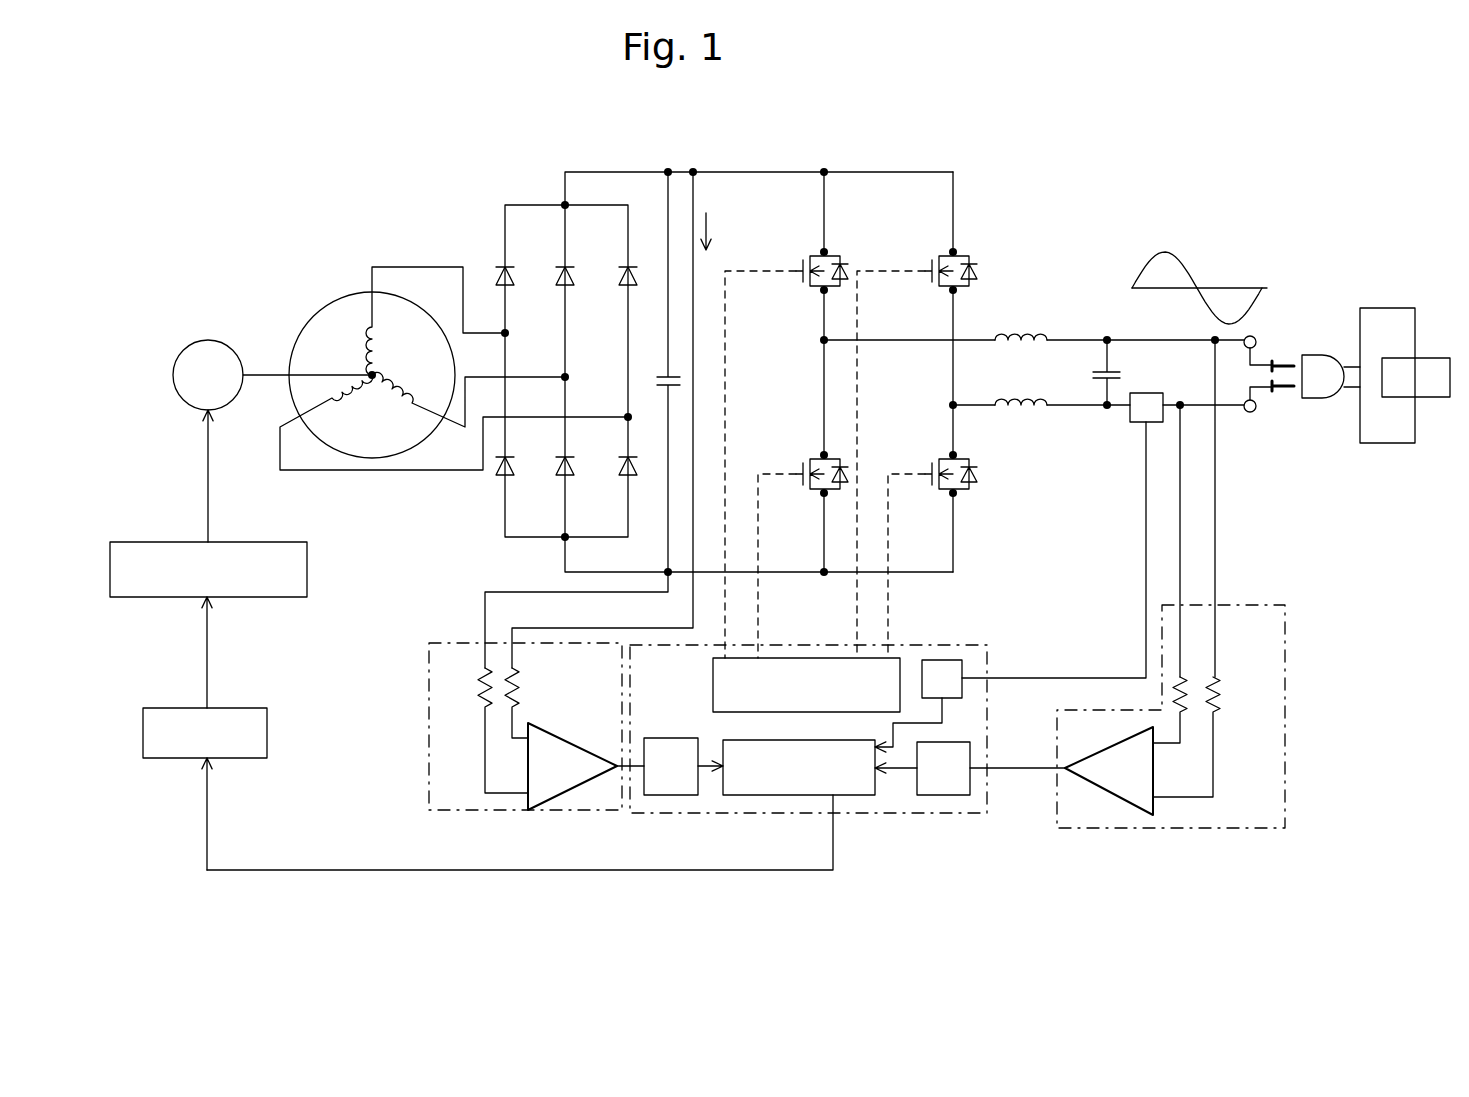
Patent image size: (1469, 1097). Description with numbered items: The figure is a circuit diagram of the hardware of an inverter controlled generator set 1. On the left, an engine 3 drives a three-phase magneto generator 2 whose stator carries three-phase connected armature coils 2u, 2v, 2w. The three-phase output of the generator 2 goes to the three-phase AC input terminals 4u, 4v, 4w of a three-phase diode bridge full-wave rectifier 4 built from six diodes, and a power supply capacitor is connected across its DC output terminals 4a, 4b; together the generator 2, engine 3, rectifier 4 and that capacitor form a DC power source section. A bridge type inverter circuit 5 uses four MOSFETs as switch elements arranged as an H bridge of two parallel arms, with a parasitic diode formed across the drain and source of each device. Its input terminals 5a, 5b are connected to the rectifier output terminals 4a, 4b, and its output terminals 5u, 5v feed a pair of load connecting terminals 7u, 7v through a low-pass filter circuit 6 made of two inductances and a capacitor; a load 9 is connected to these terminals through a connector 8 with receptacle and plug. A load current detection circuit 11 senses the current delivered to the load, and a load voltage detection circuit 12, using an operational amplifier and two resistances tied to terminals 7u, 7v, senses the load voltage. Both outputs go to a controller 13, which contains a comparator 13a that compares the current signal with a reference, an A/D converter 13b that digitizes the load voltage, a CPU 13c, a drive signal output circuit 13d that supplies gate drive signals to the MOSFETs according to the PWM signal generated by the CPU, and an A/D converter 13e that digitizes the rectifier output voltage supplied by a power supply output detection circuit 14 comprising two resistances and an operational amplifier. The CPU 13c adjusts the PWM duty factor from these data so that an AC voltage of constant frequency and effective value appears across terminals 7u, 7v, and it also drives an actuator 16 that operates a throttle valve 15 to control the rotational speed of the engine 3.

The inverter controlled generator set 1 is at (971, 149).
The three-phase magneto generator 2 is at (449, 368).
The armature coil 2u is at (370, 328).
The armature coil 2v is at (392, 392).
The armature coil 2w is at (340, 398).
The engine 3 is at (215, 329).
The three-phase diode bridge full-wave rectifier 4 is at (546, 350).
The DC output terminal of rectifier 4a is at (565, 205).
The DC output terminal of rectifier 4b is at (562, 540).
The three-phase AC input terminal of rectifier 4u is at (503, 333).
The three-phase AC input terminal of rectifier 4v is at (563, 377).
The three-phase AC input terminal of rectifier 4w is at (627, 415).
The bridge type inverter circuit 5 is at (883, 376).
The input terminal of inverter circuit 5a is at (727, 170).
The input terminal of inverter circuit 5b is at (770, 575).
The output terminal of inverter circuit 5u is at (822, 340).
The output terminal of inverter circuit 5v is at (950, 405).
The low-pass filter circuit 6 is at (1034, 357).
The load connecting terminal 7u is at (1263, 326).
The load connecting terminal 7v is at (1254, 412).
The connector 8 is at (1318, 355).
The load 9 is at (1440, 400).
The load current detection circuit 11 is at (1130, 420).
The load voltage detection circuit 12 is at (1171, 678).
The controller 13 is at (844, 732).
The comparator 13a is at (930, 660).
The A/D converter 13b is at (955, 742).
The CPU 13c is at (790, 798).
The drive signal output circuit 13d is at (713, 682).
The A/D converter 13e is at (668, 798).
The power supply output detection circuit 14 is at (515, 704).
The throttle valve 15 is at (285, 598).
The actuator 16 is at (268, 735).